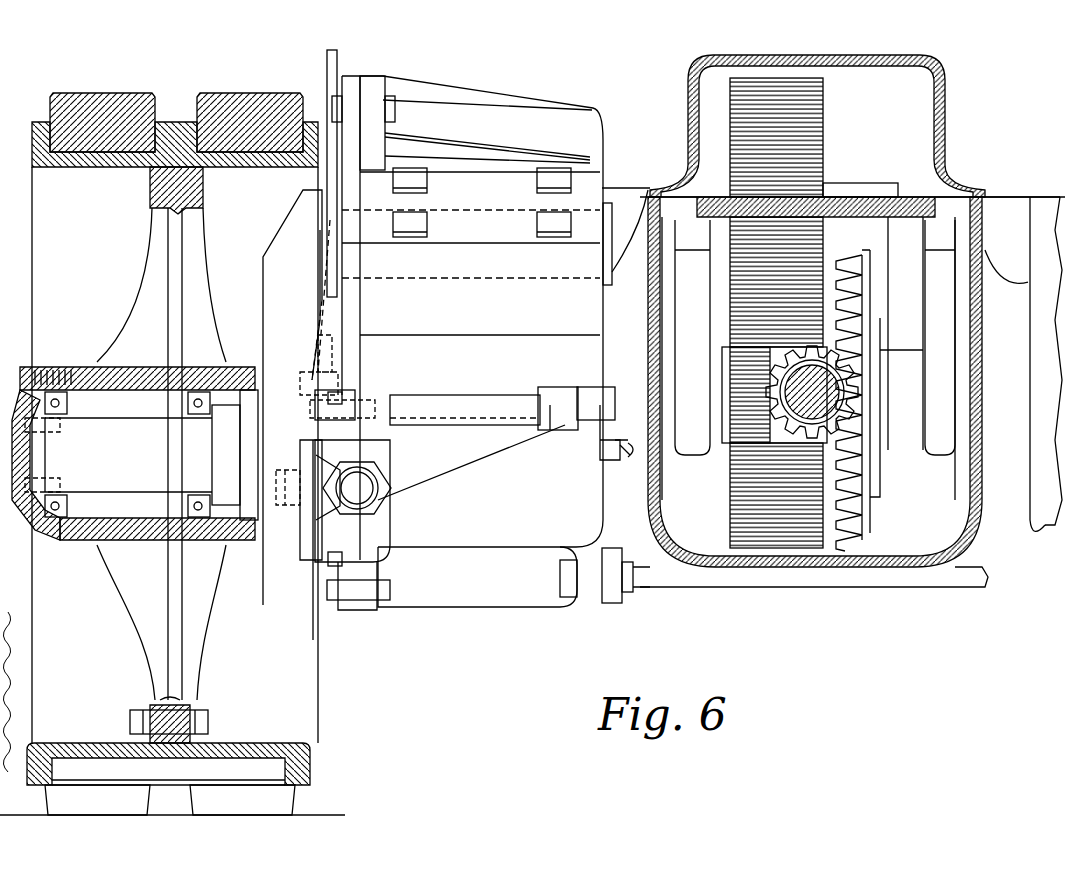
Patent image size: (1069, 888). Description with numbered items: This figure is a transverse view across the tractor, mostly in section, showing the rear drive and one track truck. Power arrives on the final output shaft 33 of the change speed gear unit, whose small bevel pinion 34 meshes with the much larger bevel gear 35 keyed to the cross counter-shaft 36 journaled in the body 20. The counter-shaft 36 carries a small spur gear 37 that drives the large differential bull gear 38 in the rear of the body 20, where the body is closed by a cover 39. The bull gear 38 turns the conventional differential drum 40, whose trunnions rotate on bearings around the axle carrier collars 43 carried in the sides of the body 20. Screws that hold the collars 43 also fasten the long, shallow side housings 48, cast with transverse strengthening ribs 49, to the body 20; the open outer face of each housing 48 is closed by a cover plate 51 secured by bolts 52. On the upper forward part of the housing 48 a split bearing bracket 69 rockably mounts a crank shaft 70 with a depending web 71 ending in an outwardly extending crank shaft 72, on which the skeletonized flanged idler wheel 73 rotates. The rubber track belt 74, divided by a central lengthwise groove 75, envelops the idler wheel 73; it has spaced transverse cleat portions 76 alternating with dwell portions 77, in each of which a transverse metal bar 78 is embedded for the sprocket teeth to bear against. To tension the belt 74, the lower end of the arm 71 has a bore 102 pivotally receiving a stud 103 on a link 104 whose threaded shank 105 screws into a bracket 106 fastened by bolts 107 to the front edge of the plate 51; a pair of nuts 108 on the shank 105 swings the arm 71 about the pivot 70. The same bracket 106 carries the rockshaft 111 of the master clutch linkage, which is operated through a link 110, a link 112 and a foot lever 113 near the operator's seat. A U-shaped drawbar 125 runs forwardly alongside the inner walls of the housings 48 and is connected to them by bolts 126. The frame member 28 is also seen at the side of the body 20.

The body 20 is at (945, 543).
The frame member 28 is at (1034, 524).
The final power output shaft 33 is at (838, 398).
The bevel pinion 34 is at (845, 384).
The bevel gear 35 is at (866, 264).
The cross counter-shaft 36 is at (892, 430).
The spur gear 37 is at (726, 446).
The differential bull gear 38 is at (825, 104).
The cover 39 is at (945, 96).
The differential drum 40 is at (884, 186).
The axle carrier collar 43 is at (688, 258).
The side housing 48 is at (590, 125).
The transverse strengthening rib 49 is at (430, 128).
The cover plate 51 is at (392, 80).
The bolt 52 is at (328, 102).
The split bearing bracket 69 is at (590, 182).
The crank shaft 70 is at (504, 208).
The depending web 71 is at (270, 300).
The crank shaft 72 is at (163, 489).
The idler wheel 73 is at (132, 318).
The rubber track belt 74 is at (116, 98).
The central lengthwise groove 75 is at (164, 124).
The cleat portion 76 is at (282, 96).
The dwell portion 77 is at (258, 798).
The transverse metal bar 78 is at (185, 130).
The bore 102 is at (308, 526).
The stud 103 is at (300, 480).
The link 104 is at (330, 520).
The threaded shank 105 is at (364, 482).
The bracket 106 is at (358, 470).
The bolt 107 is at (328, 432).
The nut 108 is at (380, 498).
The link 110 is at (618, 460).
The rockshaft 111 is at (517, 398).
The link 112 is at (338, 356).
The foot lever 113 is at (340, 86).
The drawbar 125 is at (925, 590).
The bolt 126 is at (560, 574).